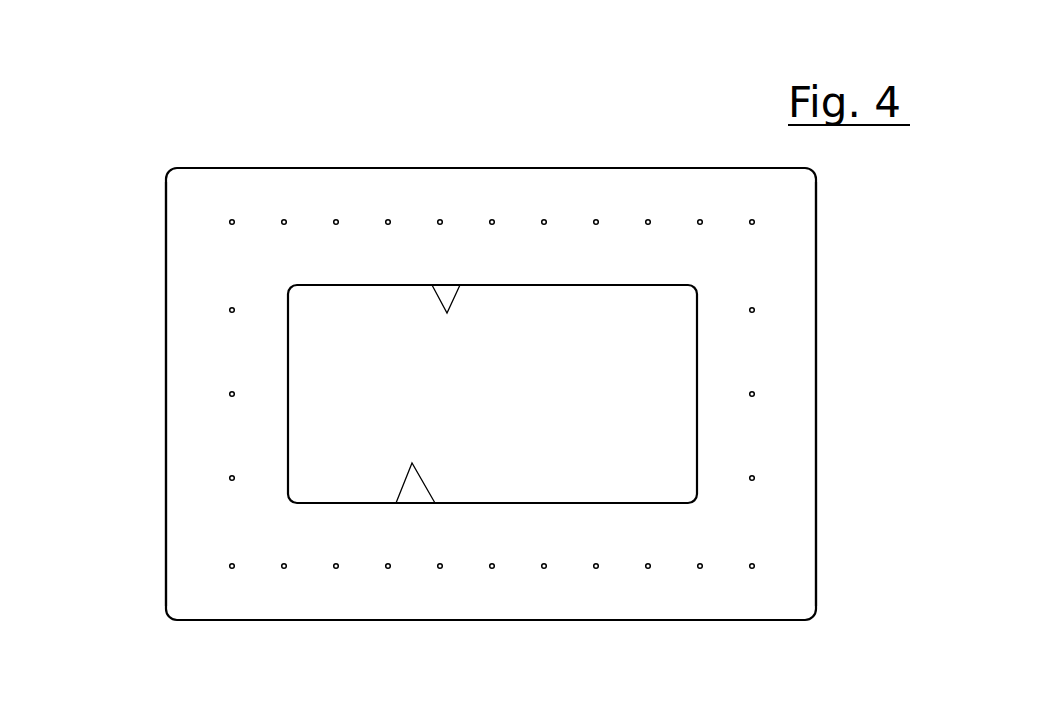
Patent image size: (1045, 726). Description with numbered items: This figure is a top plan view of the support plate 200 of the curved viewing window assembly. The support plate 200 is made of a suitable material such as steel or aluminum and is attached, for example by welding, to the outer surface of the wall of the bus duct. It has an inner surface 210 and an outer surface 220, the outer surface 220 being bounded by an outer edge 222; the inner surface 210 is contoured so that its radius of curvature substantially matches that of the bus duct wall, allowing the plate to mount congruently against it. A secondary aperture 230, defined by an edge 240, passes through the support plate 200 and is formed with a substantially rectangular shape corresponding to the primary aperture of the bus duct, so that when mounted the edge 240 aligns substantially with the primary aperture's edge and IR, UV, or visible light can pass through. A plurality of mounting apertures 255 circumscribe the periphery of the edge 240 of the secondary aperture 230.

The support plate 200 is at (491, 356).
The inner surface 210 is at (491, 126).
The outer surface 220 is at (113, 394).
The outer edge 222 is at (816, 384).
The secondary aperture 230 is at (499, 202).
The edge 240 is at (346, 566).
The mounting apertures 255 is at (338, 219).